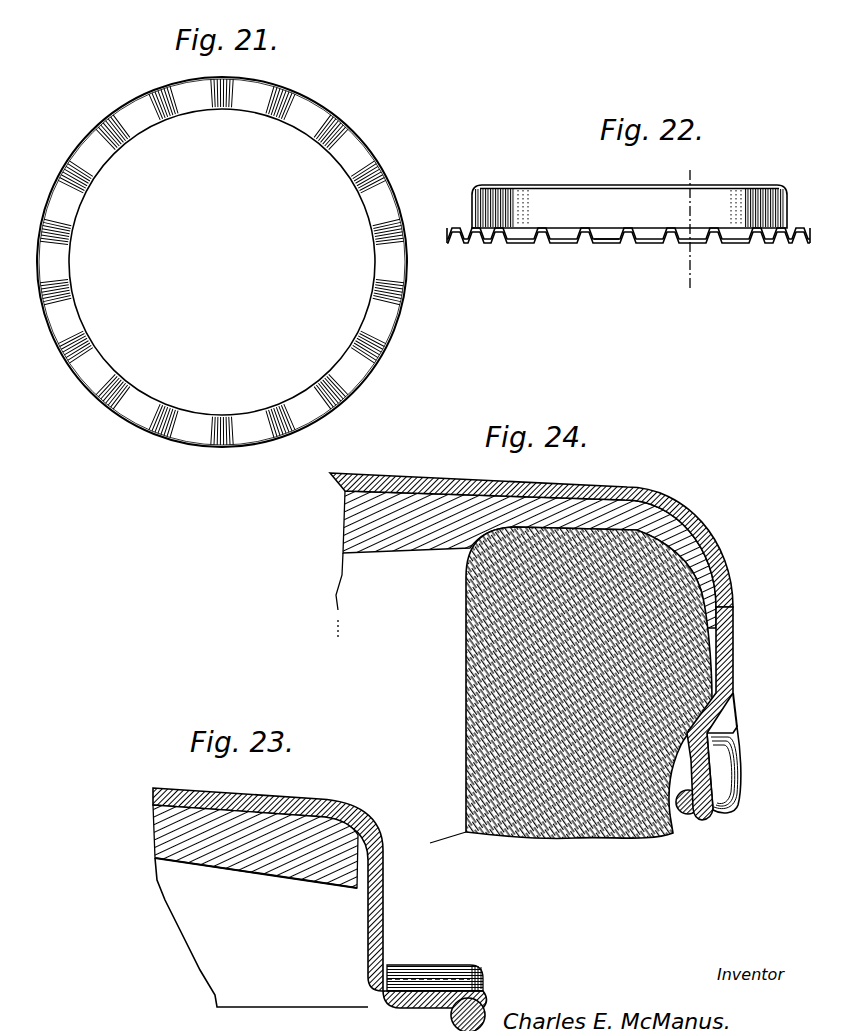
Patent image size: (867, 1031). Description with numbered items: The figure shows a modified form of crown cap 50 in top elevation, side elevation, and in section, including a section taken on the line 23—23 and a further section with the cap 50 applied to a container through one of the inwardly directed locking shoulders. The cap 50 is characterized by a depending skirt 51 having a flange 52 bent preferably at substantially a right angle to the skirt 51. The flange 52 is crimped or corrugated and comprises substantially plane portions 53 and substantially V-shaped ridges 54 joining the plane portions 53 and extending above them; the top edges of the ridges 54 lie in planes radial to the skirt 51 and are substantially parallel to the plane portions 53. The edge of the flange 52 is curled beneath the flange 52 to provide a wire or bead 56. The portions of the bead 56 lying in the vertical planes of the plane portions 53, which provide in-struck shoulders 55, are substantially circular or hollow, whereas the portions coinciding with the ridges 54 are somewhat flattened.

In FIG. 21, the cap 50 is at (222, 262).
In FIG. 24, the cap 50 is at (632, 478).
In FIG. 22, the depending skirt 51 is at (492, 200).
In FIG. 24, the depending skirt 51 is at (734, 632).
In FIG. 21, the flange 52 is at (378, 328).
In FIG. 22, the plane portions 53 is at (562, 239).
In FIG. 22, the V-shaped ridges 54 is at (628, 241).
In FIG. 24, the in-struck shoulders 55 is at (692, 735).
In FIG. 23, the wire or bead 56 is at (483, 998).
In FIG. 24, the wire or bead 56 is at (697, 818).
In FIG. 22, the section line 23— 23 is at (691, 229).